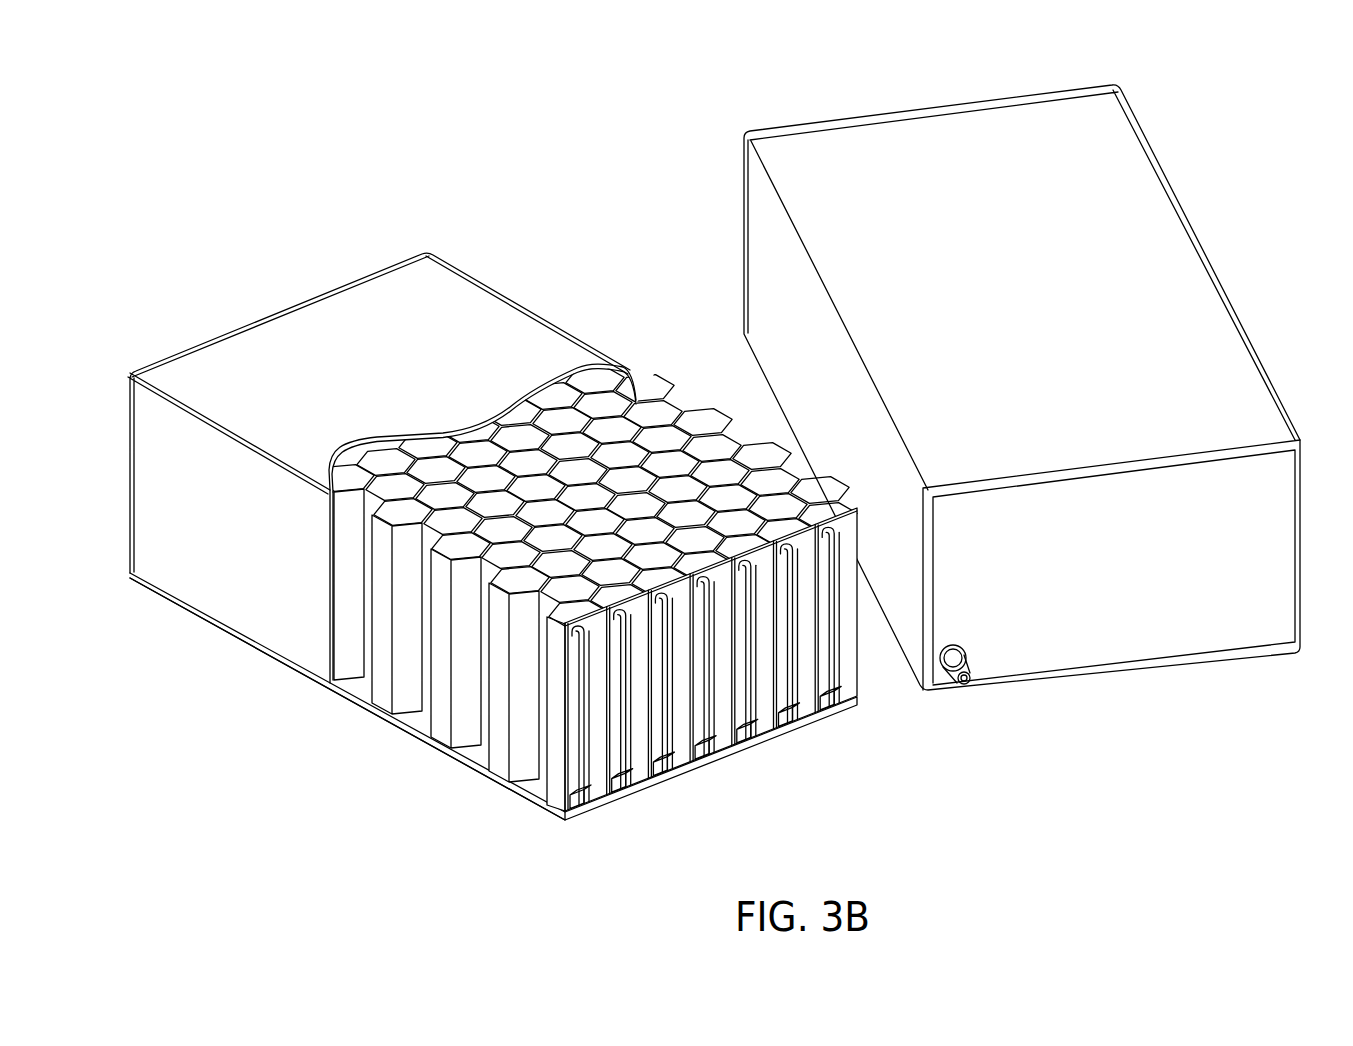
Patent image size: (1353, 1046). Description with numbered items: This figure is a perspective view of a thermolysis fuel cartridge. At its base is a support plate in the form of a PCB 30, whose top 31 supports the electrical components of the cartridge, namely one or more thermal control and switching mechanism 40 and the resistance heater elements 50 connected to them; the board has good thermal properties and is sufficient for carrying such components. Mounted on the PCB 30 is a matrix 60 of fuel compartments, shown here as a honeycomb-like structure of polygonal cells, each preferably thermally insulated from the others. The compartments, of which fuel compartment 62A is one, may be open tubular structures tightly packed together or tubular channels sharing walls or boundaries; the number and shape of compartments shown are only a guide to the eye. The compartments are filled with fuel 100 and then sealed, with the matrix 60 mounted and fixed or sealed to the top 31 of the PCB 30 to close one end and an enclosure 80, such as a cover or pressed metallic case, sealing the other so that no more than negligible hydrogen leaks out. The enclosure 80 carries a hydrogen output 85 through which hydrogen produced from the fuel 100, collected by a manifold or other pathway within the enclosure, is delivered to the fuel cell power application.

The PCB 30 is at (572, 818).
The top 31 is at (417, 718).
The thermal control and switching mechanism 40 is at (667, 773).
The resistance heater element 50 is at (583, 778).
The matrix 60 is at (555, 797).
The fuel compartment 62A is at (578, 647).
The enclosure 80 is at (193, 572).
The hydrogen output 85 is at (950, 672).
The fuel 100 is at (625, 482).